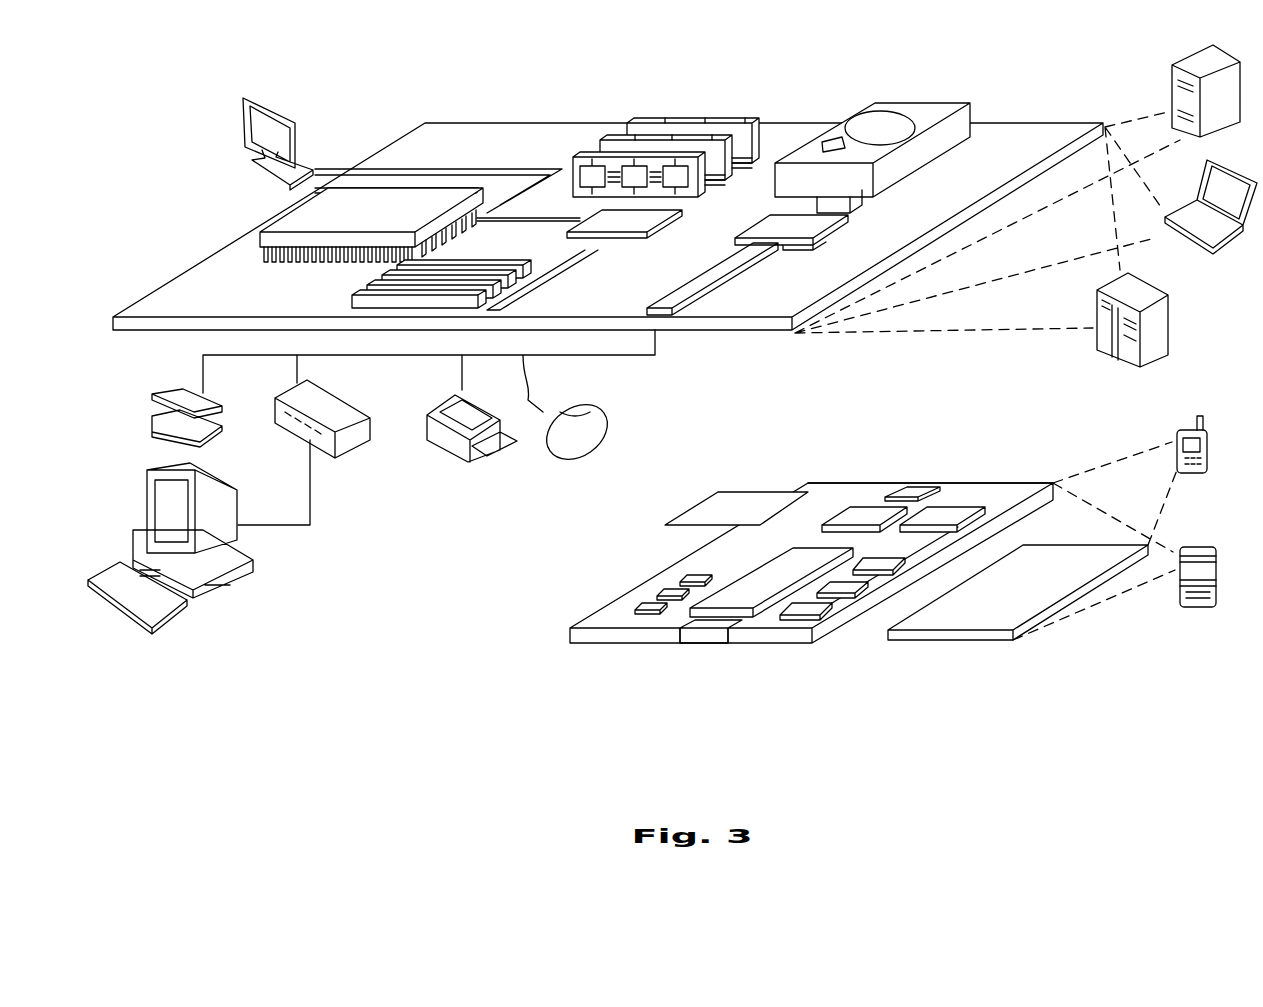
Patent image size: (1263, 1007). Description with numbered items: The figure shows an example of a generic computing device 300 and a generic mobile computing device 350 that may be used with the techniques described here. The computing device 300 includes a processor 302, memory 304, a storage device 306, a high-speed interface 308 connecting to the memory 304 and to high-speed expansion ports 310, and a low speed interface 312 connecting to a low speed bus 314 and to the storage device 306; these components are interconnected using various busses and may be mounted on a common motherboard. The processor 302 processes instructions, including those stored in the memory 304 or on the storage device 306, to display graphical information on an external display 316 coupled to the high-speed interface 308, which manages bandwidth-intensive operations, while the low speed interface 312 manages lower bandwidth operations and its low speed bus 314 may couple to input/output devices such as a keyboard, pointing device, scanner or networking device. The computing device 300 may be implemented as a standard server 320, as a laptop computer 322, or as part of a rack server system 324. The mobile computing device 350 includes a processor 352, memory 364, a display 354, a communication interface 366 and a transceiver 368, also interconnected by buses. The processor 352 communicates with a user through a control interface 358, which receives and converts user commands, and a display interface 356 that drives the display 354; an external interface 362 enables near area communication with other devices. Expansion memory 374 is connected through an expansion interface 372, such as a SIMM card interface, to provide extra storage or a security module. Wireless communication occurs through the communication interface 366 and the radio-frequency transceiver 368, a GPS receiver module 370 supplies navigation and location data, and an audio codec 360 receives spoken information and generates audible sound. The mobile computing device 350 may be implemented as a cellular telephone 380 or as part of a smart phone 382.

The generic computing device 300 is at (380, 54).
The processor 302 is at (278, 215).
The memory 304 is at (678, 117).
The storage device 306 is at (873, 103).
The high-speed interface 308 is at (620, 240).
The high-speed expansion ports 310 is at (353, 297).
The low speed interface 312 is at (767, 217).
The low speed bus 314 is at (660, 307).
The display 316 is at (252, 98).
The standard server 320 is at (1182, 60).
The laptop computer 322 is at (1252, 238).
The rack server system 324 is at (1172, 327).
The generic mobile computing device 350 is at (525, 661).
The processor 352 is at (752, 575).
The display 354 is at (1073, 545).
The display interface 356 is at (823, 612).
The control interface 358 is at (860, 592).
The audio codec 360 is at (910, 560).
The external interface 362 is at (705, 645).
The memory 364 is at (657, 590).
The communication interface 366 is at (860, 507).
The transceiver 368 is at (950, 507).
The GPS receiver module 370 is at (913, 487).
The expansion interface 372 is at (808, 483).
The expansion memory 374 is at (720, 492).
The cellular telephone 380 is at (1187, 425).
The smart phone 382 is at (1205, 547).